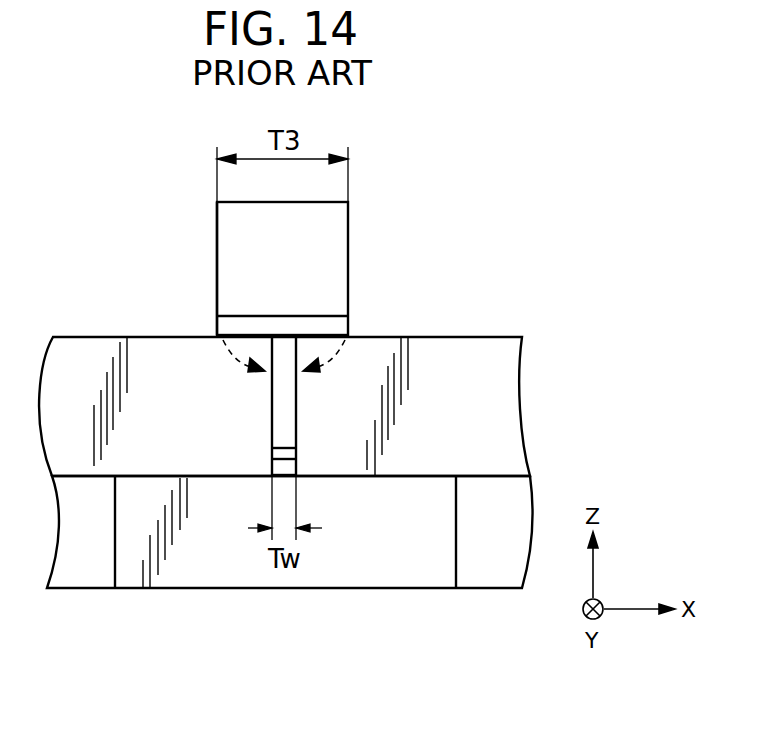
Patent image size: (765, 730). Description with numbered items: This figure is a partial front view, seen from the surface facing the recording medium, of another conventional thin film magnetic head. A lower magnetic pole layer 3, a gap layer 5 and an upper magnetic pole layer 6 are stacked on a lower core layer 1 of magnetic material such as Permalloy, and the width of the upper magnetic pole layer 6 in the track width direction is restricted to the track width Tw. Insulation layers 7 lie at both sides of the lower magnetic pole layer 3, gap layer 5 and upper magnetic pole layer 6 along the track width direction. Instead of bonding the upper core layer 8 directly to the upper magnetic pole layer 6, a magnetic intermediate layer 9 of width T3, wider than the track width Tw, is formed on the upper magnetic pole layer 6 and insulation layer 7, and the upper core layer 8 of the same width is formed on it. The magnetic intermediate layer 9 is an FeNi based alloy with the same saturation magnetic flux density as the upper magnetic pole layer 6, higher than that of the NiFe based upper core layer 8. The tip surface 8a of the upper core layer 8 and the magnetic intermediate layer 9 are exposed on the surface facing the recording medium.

The lower core layer 1 is at (392, 550).
The lower magnetic pole layer 3 is at (272, 467).
The gap layer 5 is at (272, 445).
The upper magnetic pole layer 6 is at (272, 403).
The insulation layer 7 is at (70, 375).
The upper core layer 8 is at (337, 247).
The tip surface 8a is at (223, 240).
The magnetic intermediate layer 9 is at (337, 325).